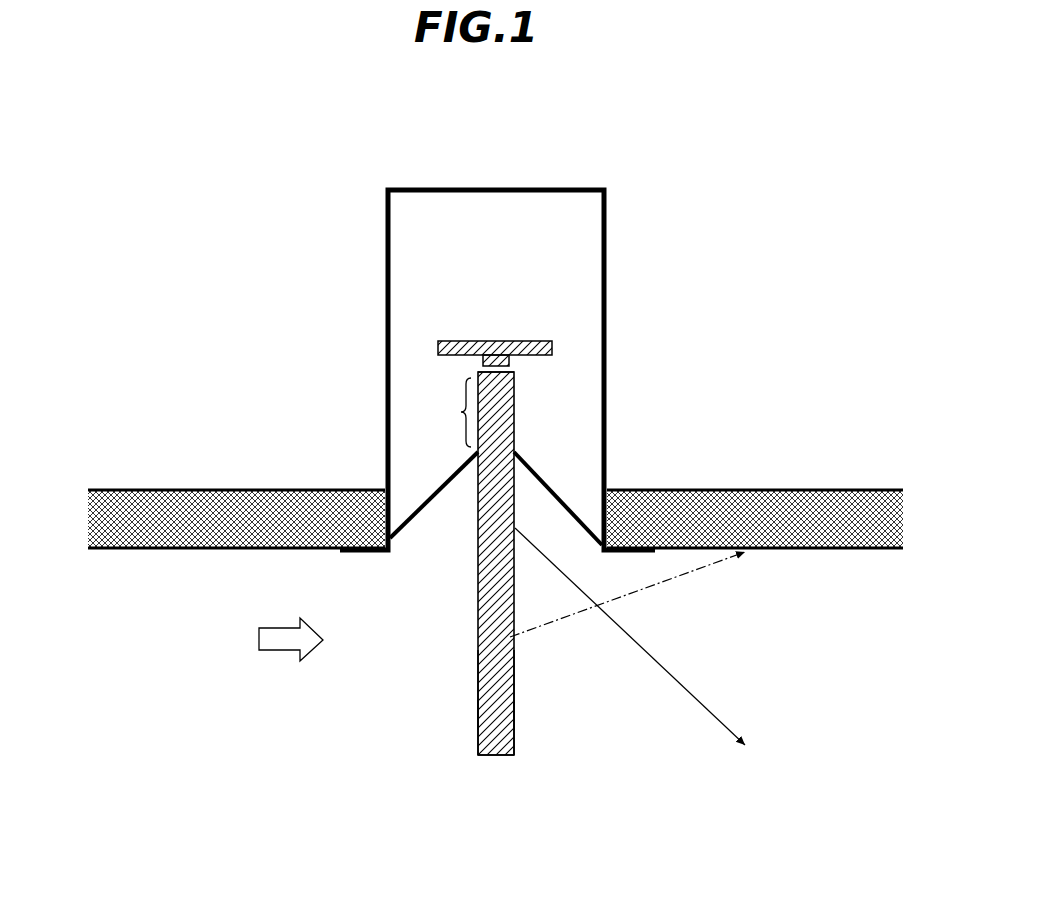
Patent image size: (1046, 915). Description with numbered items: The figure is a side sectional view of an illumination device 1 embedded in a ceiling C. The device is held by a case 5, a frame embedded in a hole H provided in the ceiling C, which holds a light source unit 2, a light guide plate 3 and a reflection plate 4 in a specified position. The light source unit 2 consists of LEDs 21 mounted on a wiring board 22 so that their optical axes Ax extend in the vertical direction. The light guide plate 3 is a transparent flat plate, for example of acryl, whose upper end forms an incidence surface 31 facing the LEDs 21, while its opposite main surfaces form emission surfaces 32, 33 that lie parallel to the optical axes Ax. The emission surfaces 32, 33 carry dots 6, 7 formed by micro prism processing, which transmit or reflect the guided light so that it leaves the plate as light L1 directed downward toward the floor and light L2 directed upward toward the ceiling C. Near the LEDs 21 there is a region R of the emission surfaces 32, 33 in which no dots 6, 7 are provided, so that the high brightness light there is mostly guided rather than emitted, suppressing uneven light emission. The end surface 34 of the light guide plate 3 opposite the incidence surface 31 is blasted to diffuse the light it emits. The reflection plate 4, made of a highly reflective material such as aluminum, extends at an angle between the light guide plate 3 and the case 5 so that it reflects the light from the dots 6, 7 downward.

The illumination device 1 is at (230, 346).
The light source unit 2 is at (462, 338).
The LEDs 21 is at (485, 362).
The wiring board 22 is at (515, 340).
The light guide plate 3 is at (474, 612).
The incidence surface 31 is at (508, 370).
The emission surface 32 is at (478, 690).
The emission surface 33 is at (514, 690).
The end surface 34 is at (495, 758).
The reflection plate 4 is at (445, 486).
The case 5 is at (608, 264).
The dots 6 is at (478, 742).
The dots 7 is at (514, 736).
The optical axes Ax is at (514, 411).
The ceiling C is at (190, 550).
The hole H is at (378, 520).
The light directed downward L1 is at (714, 712).
The light directed upward L2 is at (672, 577).
The region R is at (455, 412).